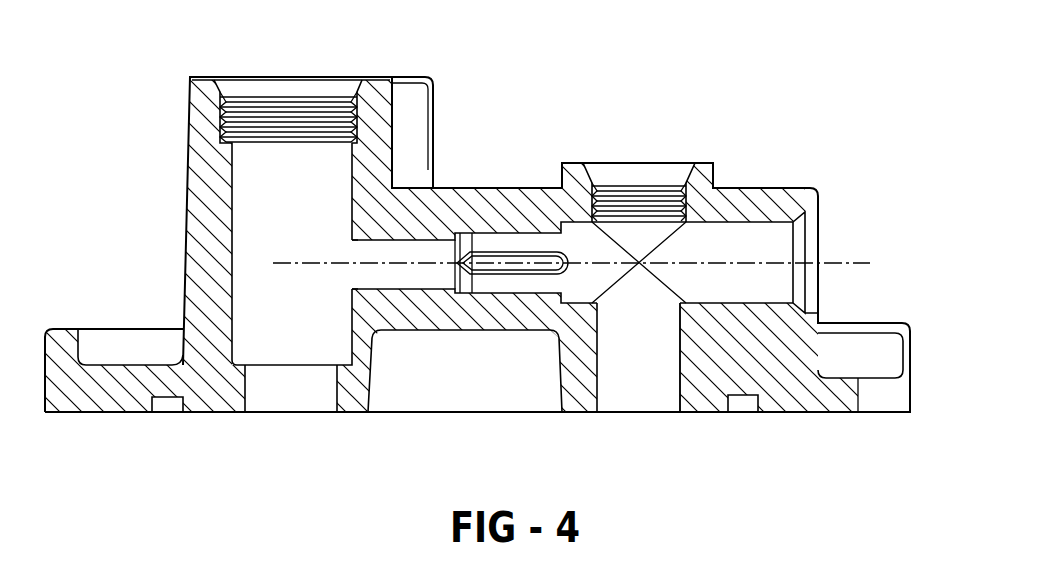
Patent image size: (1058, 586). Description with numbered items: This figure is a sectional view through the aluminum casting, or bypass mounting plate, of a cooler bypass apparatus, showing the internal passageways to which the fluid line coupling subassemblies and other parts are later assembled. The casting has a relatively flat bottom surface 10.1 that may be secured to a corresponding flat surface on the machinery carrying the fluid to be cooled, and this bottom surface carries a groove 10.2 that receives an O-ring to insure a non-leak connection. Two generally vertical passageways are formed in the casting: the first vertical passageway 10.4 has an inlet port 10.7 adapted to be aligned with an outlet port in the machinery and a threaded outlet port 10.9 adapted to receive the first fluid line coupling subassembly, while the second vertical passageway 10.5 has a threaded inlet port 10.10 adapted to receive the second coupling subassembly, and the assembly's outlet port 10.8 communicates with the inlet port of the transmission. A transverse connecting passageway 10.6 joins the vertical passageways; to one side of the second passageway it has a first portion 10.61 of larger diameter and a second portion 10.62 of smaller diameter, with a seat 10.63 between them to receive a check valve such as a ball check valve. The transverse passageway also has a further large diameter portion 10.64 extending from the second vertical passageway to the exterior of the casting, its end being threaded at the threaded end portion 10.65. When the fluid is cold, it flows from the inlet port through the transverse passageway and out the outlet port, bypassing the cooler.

The flat bottom surface 10.1 is at (350, 412).
The groove 10.2 is at (162, 407).
The first vertical passageway 10.4 is at (232, 176).
The second vertical passageway 10.5 is at (590, 388).
The transverse connecting passageway 10.6 is at (756, 293).
The inlet port 10.7 is at (257, 412).
The outlet port 10.8 is at (680, 398).
The threaded outlet port 10.9 is at (320, 86).
The threaded inlet port 10.10 is at (587, 182).
The first portion of transverse passageway 10.61 is at (530, 293).
The second portion of transverse passageway 10.62 is at (378, 287).
The seat 10.63 is at (467, 247).
The further large diameter portion 10.64 is at (717, 232).
The threaded end portion 10.65 is at (840, 262).